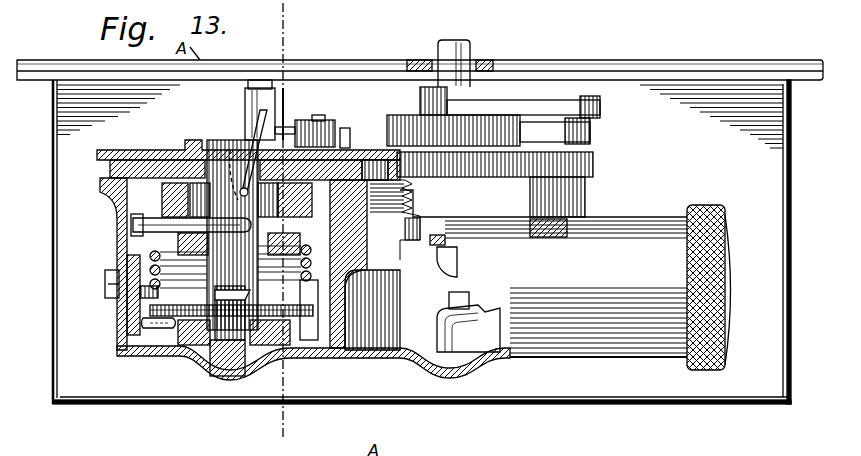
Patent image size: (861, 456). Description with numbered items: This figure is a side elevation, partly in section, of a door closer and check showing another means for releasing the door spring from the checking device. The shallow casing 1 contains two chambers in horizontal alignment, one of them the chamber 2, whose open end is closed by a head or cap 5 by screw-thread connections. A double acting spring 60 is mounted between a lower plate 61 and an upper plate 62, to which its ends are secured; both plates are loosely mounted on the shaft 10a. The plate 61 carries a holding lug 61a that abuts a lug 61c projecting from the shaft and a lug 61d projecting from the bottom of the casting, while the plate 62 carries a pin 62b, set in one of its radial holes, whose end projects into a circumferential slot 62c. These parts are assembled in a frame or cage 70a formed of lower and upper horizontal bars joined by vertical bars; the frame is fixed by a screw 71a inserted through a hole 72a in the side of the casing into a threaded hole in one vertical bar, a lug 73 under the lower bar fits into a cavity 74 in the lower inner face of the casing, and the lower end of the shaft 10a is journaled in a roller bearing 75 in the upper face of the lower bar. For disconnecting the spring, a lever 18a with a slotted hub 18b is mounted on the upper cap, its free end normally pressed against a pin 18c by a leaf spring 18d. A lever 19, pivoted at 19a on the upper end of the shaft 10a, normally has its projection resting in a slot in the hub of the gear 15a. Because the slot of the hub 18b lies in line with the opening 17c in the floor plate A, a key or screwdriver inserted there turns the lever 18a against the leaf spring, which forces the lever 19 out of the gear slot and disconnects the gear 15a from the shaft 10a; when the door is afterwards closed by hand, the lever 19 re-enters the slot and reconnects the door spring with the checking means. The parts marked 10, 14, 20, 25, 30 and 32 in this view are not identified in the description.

The casing 1 is at (398, 356).
The chamber 2 is at (380, 320).
The head or cap 5 is at (728, 242).
The bracket 10 is at (482, 345).
The shaft 10a is at (313, 370).
The shaft 14 is at (288, 17).
The gear 15a is at (103, 178).
The opening 17c is at (258, 65).
The lever 18a is at (284, 140).
The slotted hub 18b is at (247, 94).
The pin 18c is at (318, 135).
The leaf spring 18d is at (352, 130).
The lever 19 is at (261, 112).
The pivot 19a is at (244, 150).
The flange 20 is at (133, 152).
The gear 25 is at (590, 150).
The arm 30 is at (598, 100).
The gear 32 is at (592, 128).
The double acting spring 60 is at (152, 256).
The plate 61 is at (300, 318).
The holding lug 61a is at (197, 362).
The lug 61c is at (240, 345).
The lug 61d is at (143, 328).
The plate 62 is at (136, 223).
The pin 62b is at (135, 228).
The circumferential slot 62c is at (255, 208).
The frame or cage 70a is at (140, 326).
The screw 71a is at (105, 278).
The hole 72a is at (122, 300).
The lug 73 is at (225, 345).
The cavity 74 is at (246, 372).
The roller bearing 75 is at (382, 150).